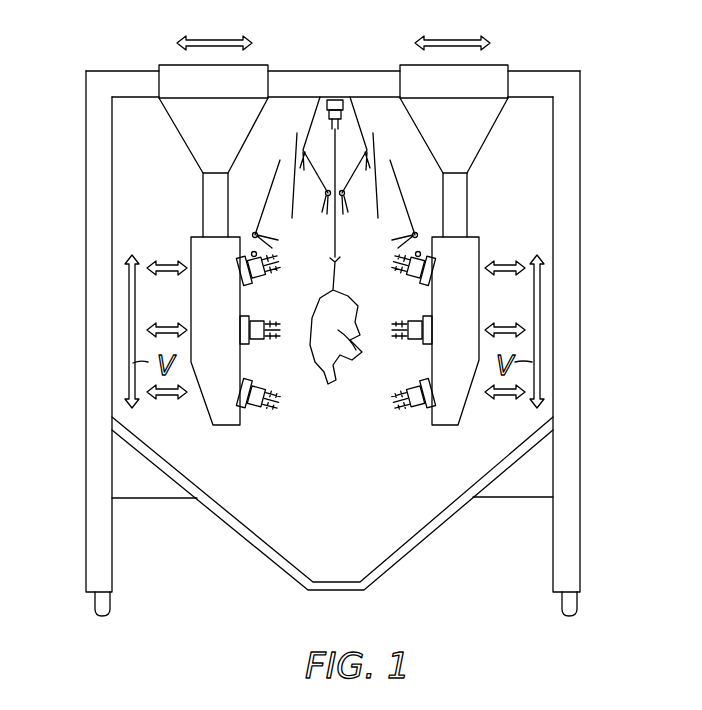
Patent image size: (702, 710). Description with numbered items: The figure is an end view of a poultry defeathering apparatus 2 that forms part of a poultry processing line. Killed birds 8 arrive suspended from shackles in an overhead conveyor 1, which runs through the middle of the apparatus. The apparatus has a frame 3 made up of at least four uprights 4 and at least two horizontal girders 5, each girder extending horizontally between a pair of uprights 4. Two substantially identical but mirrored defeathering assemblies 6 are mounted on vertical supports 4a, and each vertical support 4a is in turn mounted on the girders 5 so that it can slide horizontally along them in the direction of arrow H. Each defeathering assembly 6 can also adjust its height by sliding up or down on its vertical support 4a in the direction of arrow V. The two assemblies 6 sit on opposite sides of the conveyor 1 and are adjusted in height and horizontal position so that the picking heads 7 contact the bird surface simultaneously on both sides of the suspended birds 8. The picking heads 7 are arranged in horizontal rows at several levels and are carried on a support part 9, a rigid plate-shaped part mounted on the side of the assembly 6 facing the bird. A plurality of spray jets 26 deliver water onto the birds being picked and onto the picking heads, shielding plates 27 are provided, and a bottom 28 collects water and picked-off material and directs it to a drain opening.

The overhead conveyor 1 is at (330, 97).
The poultry defeathering apparatus 2 is at (82, 347).
The frame 3 is at (578, 68).
The uprights 4 is at (100, 250).
The vertical supports 4a is at (212, 197).
The horizontal girders 5 is at (527, 78).
The defeathering assemblies 6 is at (221, 311).
The picking heads 7 is at (273, 277).
The birds 8 is at (345, 365).
The support part 9 is at (240, 258).
The spray jets 26 is at (303, 150).
The shielding plates 27 is at (251, 232).
The bottom 28 is at (426, 528).